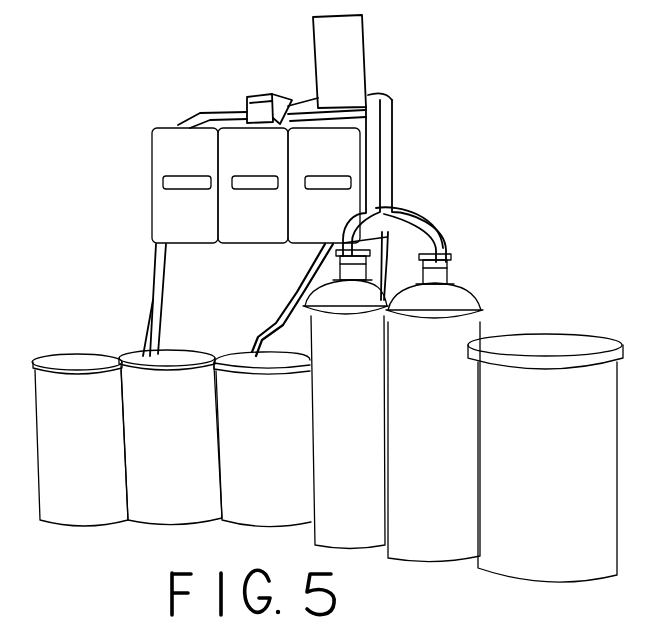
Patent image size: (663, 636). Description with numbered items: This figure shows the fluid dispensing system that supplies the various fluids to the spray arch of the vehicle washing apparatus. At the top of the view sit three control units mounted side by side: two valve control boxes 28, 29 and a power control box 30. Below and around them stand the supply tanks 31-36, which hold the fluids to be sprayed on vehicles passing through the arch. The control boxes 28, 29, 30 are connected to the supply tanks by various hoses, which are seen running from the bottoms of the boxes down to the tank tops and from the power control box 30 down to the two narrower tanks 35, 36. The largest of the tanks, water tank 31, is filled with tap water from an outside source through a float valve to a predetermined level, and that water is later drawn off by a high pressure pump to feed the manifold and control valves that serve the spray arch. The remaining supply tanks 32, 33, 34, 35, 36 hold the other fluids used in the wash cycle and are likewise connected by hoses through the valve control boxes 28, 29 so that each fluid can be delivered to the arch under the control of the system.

The valve control box 28 is at (171, 130).
The valve control box 29 is at (240, 145).
The power control box 30 is at (346, 129).
The water tank 31 is at (548, 565).
The supply tank 32 is at (90, 513).
The supply tank 33 is at (183, 507).
The supply tank 34 is at (277, 512).
The supply tank 35 is at (365, 530).
The supply tank 36 is at (430, 548).